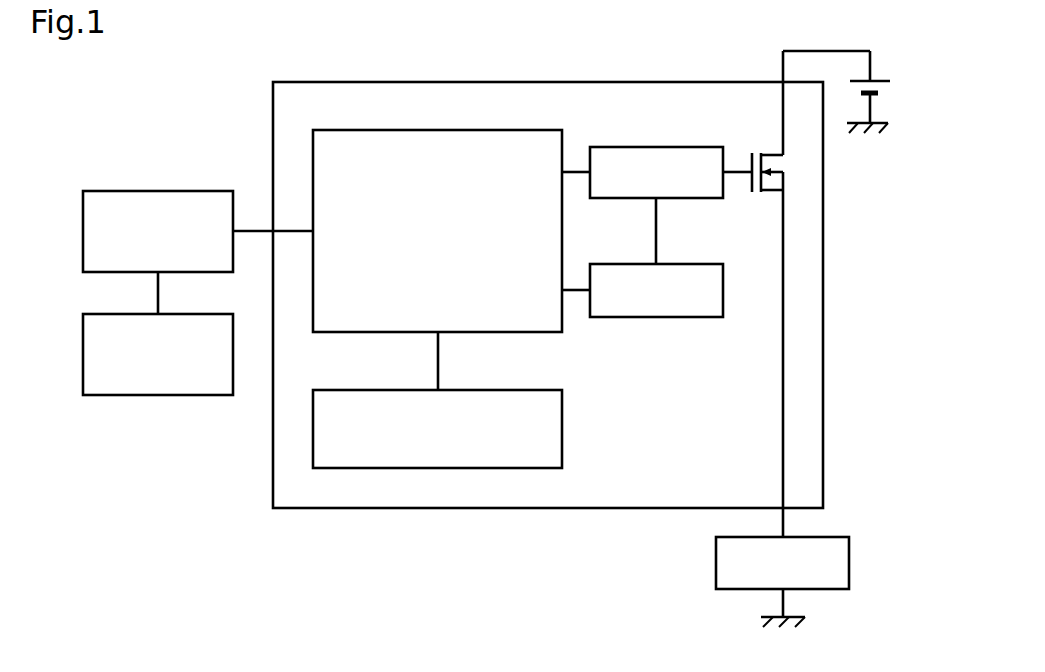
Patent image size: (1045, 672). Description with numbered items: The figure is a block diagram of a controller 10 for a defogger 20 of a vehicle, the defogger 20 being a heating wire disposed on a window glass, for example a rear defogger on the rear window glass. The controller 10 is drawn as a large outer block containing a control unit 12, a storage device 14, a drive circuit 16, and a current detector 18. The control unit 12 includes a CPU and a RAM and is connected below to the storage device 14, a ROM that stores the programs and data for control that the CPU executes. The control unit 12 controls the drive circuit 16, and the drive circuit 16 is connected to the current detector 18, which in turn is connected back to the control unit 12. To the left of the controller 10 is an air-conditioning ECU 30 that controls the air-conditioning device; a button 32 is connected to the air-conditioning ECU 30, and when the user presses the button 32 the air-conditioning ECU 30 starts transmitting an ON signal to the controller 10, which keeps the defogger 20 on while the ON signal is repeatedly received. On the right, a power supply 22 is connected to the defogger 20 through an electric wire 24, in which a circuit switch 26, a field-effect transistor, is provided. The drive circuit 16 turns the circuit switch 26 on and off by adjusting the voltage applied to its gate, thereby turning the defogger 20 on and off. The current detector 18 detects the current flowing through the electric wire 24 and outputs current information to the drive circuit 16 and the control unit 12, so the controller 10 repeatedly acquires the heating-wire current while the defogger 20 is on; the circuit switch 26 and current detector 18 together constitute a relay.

The controller 10 is at (330, 81).
The control unit 12 is at (360, 129).
The storage device 14 is at (360, 389).
The drive circuit 16 is at (632, 146).
The current detector 18 is at (632, 264).
The defogger 20 is at (851, 562).
The power supply 22 is at (890, 80).
The electric wire 24 is at (783, 108).
The circuit switch 26 is at (751, 159).
The air-conditioning ECU 30 is at (130, 191).
The button 32 is at (130, 315).